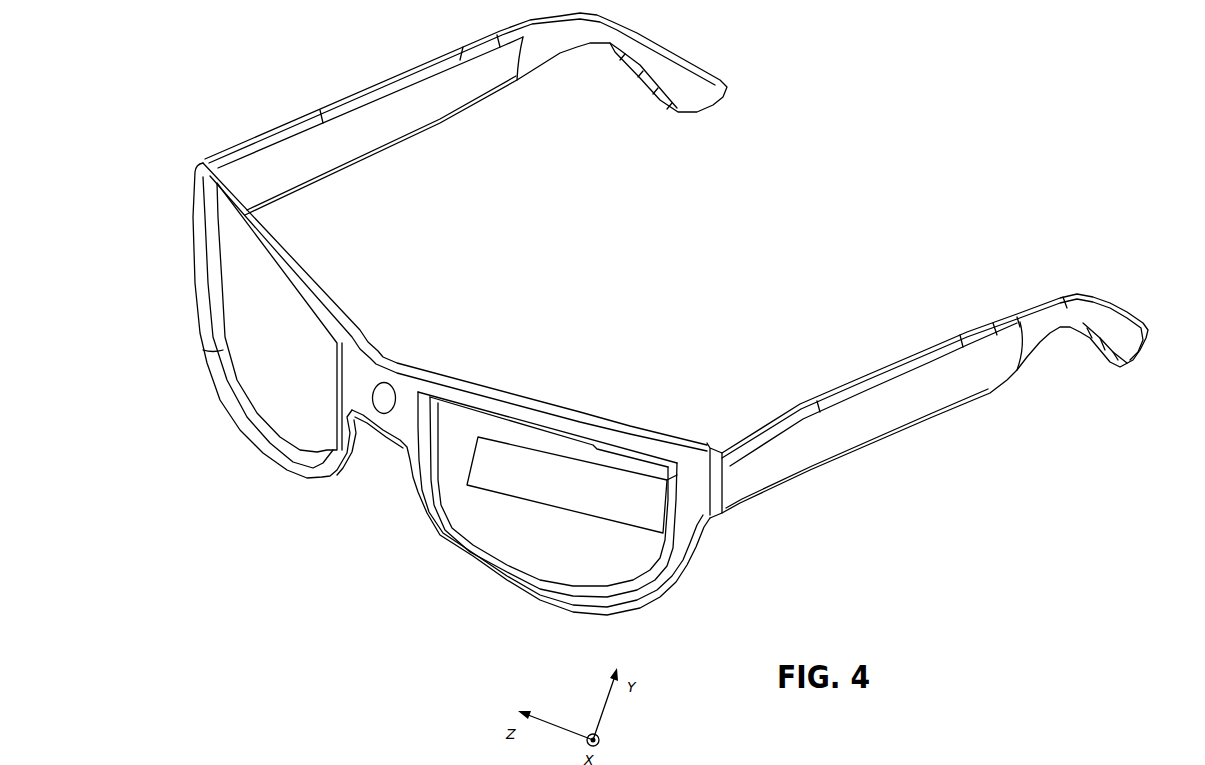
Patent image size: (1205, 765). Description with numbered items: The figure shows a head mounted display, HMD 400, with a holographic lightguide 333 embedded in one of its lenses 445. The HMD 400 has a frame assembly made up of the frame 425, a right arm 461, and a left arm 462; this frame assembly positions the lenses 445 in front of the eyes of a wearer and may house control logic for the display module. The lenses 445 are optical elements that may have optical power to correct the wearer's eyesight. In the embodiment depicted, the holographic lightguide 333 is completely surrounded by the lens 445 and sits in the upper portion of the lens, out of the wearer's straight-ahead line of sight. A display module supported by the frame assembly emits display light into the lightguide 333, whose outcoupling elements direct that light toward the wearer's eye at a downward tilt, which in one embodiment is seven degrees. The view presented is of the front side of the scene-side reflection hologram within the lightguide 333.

The HMD 400 is at (213, 90).
The frame 425 is at (193, 182).
The right arm 461 is at (448, 110).
The left arm 462 is at (968, 389).
The lens 445 is at (284, 365).
The holographic lightguide 333 is at (522, 500).